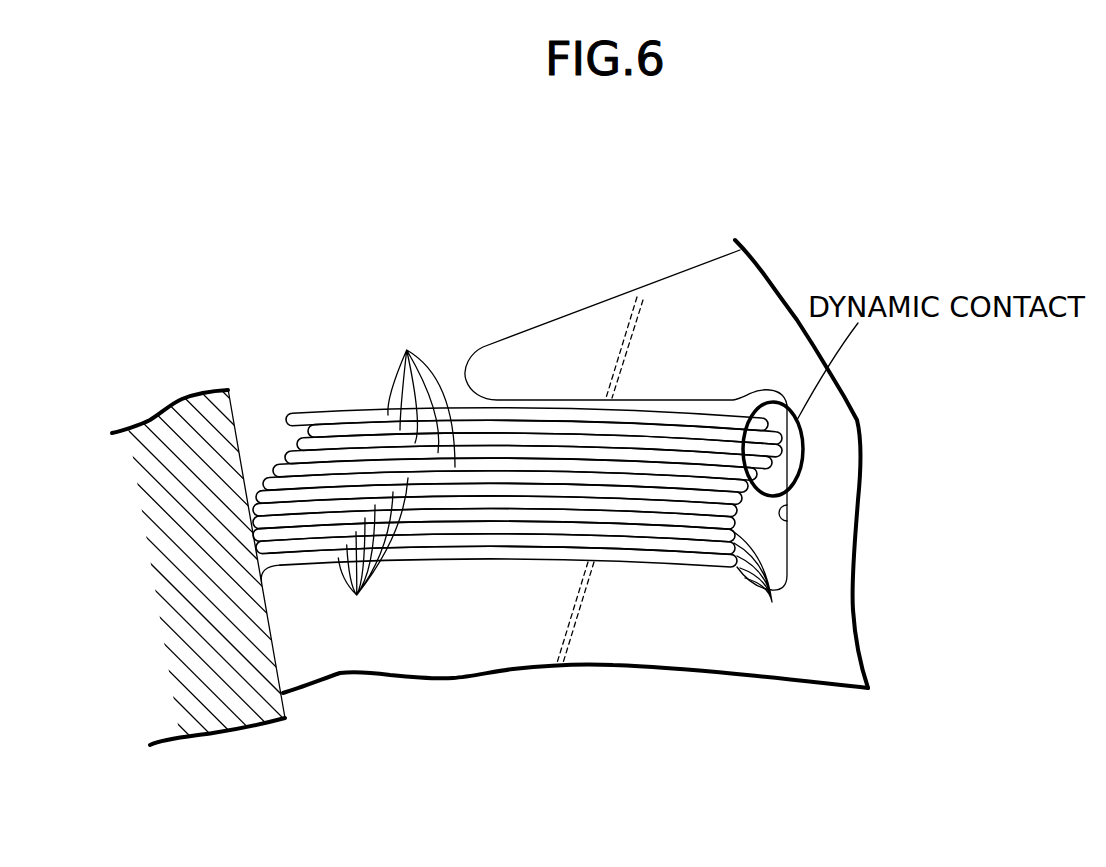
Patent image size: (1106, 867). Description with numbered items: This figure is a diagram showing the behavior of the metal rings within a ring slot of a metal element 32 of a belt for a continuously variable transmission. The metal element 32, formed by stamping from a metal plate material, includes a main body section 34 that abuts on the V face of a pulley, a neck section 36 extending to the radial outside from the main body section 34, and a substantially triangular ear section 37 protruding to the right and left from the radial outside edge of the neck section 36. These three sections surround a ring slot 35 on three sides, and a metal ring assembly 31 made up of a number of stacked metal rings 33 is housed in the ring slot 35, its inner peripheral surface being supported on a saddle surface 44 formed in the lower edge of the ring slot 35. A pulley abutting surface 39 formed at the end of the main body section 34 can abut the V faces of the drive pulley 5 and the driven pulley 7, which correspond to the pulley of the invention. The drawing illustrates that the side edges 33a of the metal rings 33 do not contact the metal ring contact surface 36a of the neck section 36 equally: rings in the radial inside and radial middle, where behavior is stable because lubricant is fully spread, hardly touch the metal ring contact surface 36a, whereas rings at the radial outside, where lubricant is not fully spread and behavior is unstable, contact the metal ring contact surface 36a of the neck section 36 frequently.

The drive pulley 5 is at (295, 536).
The driven pulley 7 is at (242, 430).
The metal ring assembly 31 is at (346, 398).
The metal element 32 is at (640, 270).
The metal ring 33 is at (396, 472).
The side edge 33a is at (771, 587).
The main body section 34 is at (488, 657).
The ring slot 35 is at (765, 533).
The neck section 36 is at (826, 492).
The metal ring contact surface 36a is at (789, 527).
The ear section 37 is at (550, 342).
The pulley abutting surface 39 is at (275, 648).
The saddle surface 44 is at (502, 552).